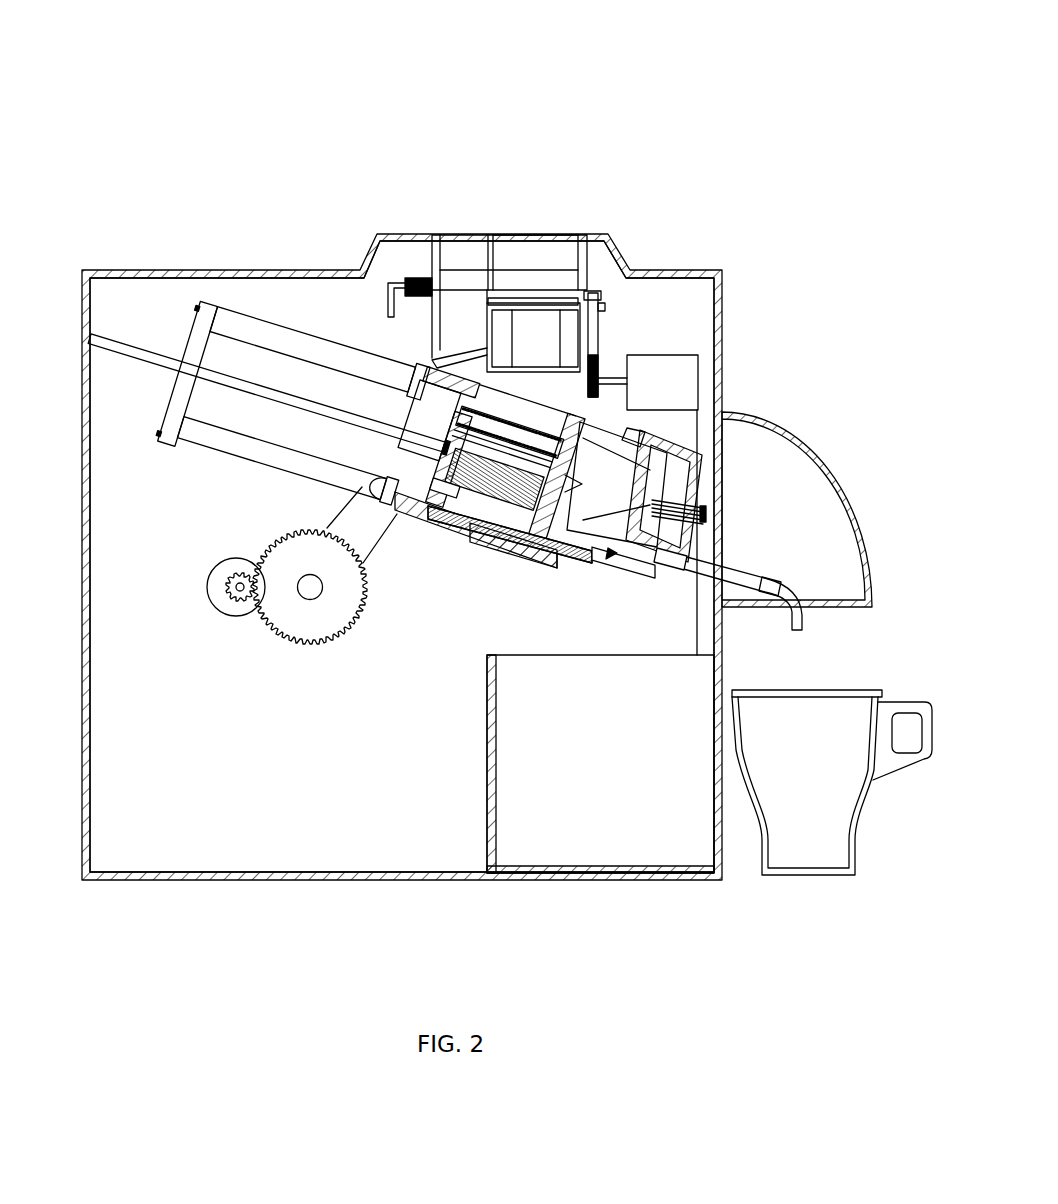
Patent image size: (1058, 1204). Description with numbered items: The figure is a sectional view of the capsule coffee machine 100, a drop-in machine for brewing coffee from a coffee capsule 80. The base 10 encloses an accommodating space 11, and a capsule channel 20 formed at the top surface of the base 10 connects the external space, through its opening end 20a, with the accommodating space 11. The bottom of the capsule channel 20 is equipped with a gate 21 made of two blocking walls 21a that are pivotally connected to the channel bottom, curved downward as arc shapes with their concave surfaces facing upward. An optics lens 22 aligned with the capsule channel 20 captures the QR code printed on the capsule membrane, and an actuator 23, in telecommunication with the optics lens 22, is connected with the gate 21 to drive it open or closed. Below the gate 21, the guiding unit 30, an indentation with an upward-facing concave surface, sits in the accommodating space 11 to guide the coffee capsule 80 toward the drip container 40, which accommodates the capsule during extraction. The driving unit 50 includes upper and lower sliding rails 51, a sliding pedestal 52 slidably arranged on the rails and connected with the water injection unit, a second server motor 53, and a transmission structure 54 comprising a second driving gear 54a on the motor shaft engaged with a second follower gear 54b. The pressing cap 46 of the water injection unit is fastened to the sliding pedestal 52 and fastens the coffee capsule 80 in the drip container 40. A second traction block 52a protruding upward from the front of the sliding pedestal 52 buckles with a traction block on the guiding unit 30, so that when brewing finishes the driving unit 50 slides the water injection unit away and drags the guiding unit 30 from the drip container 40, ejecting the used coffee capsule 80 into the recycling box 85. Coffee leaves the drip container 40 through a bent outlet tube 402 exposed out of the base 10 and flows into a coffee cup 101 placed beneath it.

The capsule coffee machine 100 is at (88, 46).
The base 10 is at (150, 265).
The accommodating space 11 is at (120, 722).
The capsule channel 20 is at (548, 238).
The opening end 20a is at (515, 246).
The gate 21 is at (497, 327).
The blocking walls 21a is at (442, 356).
The optics lens 22 is at (402, 284).
The actuator 23 is at (618, 356).
The pressing cap 46 is at (582, 412).
The driving unit 50 is at (274, 378).
The sliding rails 51 is at (287, 342).
The second server motor 53 is at (233, 557).
The transmission structure 54 is at (265, 641).
The second driving gear 54a is at (238, 590).
The second follower gear 54b is at (338, 620).
The sliding pedestal 52 is at (483, 498).
The second traction block 52a is at (548, 562).
The guiding unit 30 is at (490, 555).
The coffee capsule 80 is at (610, 553).
The drip container 40 is at (658, 565).
The outlet tube 402 is at (803, 622).
The recycling box 85 is at (490, 742).
The coffee cup 101 is at (765, 855).